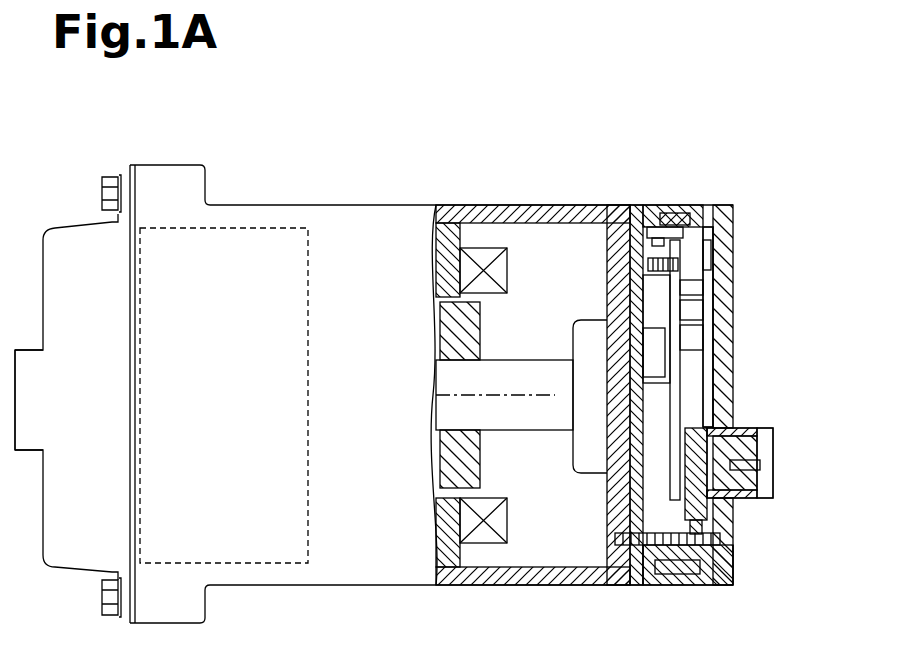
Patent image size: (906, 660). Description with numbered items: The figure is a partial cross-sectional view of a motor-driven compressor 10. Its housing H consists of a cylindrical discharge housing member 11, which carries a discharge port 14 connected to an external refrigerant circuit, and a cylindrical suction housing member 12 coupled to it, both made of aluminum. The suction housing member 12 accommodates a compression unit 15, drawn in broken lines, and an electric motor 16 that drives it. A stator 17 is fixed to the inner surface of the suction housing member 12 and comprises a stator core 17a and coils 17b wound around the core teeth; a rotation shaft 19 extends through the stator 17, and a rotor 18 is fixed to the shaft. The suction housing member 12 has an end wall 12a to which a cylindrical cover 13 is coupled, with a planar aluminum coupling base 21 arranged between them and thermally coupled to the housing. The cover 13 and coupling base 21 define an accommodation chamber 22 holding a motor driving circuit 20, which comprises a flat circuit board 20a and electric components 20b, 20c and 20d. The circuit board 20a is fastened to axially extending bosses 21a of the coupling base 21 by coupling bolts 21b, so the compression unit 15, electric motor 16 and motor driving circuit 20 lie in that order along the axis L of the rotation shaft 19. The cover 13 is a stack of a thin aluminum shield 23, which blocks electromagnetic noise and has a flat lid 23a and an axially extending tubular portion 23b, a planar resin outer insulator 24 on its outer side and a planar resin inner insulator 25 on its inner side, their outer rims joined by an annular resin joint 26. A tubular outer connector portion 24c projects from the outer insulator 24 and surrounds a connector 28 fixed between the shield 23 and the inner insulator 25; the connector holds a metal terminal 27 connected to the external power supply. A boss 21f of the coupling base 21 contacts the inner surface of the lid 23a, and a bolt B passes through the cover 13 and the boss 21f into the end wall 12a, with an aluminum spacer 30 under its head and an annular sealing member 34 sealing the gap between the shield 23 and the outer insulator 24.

The motor-driven compressor 10 is at (120, 154).
The discharge housing member 11 is at (72, 224).
The suction housing member 12 is at (328, 205).
The end wall 12a is at (610, 273).
The cover 13 is at (733, 195).
The discharge port 14 is at (26, 356).
The compression unit 15 is at (226, 226).
The electric motor 16 is at (478, 237).
The stator 17 is at (421, 395).
The stator core 17a is at (450, 303).
The coils 17b is at (458, 275).
The rotor 18 is at (480, 475).
The rotation shaft 19 is at (540, 432).
The motor driving circuit 20 is at (700, 262).
The circuit board 20a is at (645, 297).
The electric component 20b is at (703, 287).
The electric component 20c is at (703, 310).
The electric component 20d is at (595, 344).
The coupling base 21 is at (636, 482).
The bosses 21a is at (615, 222).
The coupling bolts 21b is at (710, 255).
The boss 21f is at (628, 587).
The accommodation chamber 22 is at (648, 205).
The shield 23 is at (712, 360).
The lid 23a is at (703, 335).
The tubular portion 23b is at (676, 587).
The outer insulator 24 is at (725, 587).
The outer connector portion 24c is at (762, 430).
The inner insulator 25 is at (685, 210).
The joint 26 is at (650, 232).
The metal terminal 27 is at (760, 465).
The connector 28 is at (732, 440).
The spacer 30 is at (705, 526).
The sealing member 34 is at (730, 562).
The bolt B is at (720, 540).
The housing H is at (382, 205).
The axis L is at (476, 395).